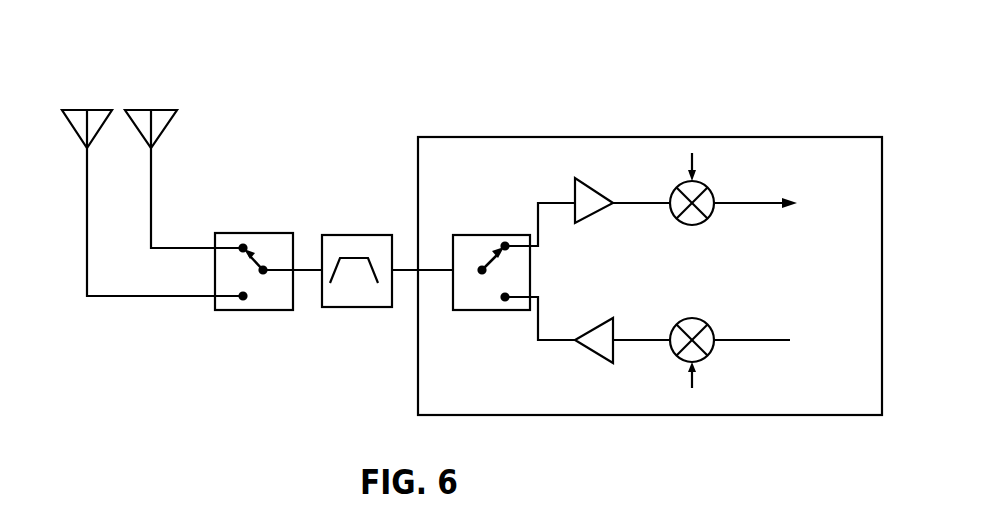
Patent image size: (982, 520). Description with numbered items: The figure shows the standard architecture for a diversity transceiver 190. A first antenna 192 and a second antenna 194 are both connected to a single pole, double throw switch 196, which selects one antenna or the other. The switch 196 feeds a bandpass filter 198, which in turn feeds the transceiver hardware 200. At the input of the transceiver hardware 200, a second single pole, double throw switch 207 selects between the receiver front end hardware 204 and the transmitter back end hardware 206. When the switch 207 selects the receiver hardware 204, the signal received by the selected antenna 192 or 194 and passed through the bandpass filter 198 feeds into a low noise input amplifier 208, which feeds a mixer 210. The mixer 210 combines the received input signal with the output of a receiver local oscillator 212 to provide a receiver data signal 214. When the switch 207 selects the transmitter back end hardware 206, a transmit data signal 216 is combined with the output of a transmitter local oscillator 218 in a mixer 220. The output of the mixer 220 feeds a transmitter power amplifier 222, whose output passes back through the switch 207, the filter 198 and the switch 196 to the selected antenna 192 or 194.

The standard transceiver 190 is at (432, 100).
The first antenna 192 is at (77, 110).
The second antenna 194 is at (165, 110).
The single pole, double throw switch 196 is at (245, 233).
The bandpass filter 198 is at (337, 235).
The transceiver hardware 200 is at (567, 137).
The receiver front end hardware 204 is at (652, 145).
The transmitter back end hardware 206 is at (570, 405).
The transmit/receive switch 207 is at (503, 235).
The low noise input amplifier 208 is at (598, 215).
The mixer 210 is at (697, 224).
The receiver local oscillator 212 is at (747, 160).
The receiver data signal 214 is at (822, 218).
The transmit data signal 216 is at (822, 358).
The transmitter local oscillator 218 is at (730, 385).
The mixer 220 is at (715, 332).
The transmitter power amplifier 222 is at (615, 332).